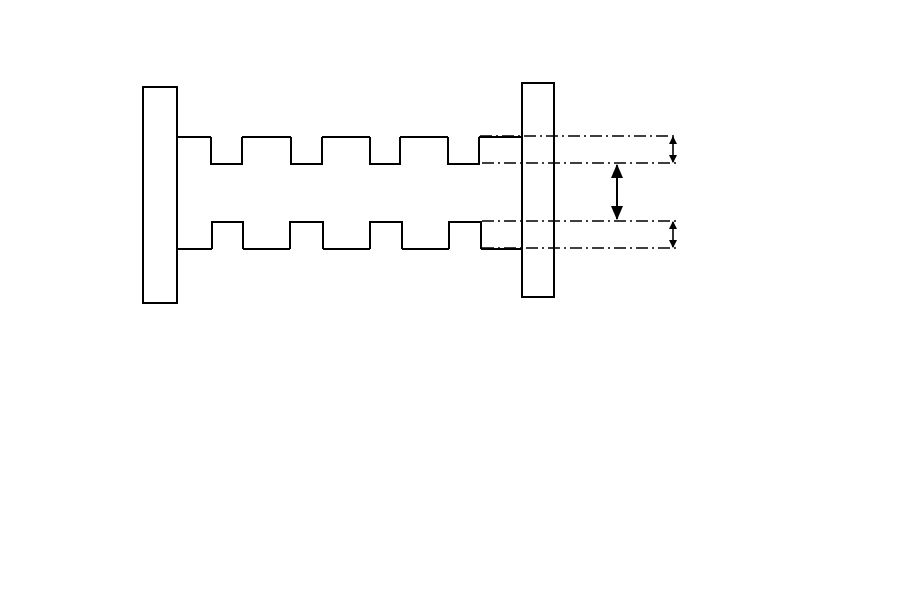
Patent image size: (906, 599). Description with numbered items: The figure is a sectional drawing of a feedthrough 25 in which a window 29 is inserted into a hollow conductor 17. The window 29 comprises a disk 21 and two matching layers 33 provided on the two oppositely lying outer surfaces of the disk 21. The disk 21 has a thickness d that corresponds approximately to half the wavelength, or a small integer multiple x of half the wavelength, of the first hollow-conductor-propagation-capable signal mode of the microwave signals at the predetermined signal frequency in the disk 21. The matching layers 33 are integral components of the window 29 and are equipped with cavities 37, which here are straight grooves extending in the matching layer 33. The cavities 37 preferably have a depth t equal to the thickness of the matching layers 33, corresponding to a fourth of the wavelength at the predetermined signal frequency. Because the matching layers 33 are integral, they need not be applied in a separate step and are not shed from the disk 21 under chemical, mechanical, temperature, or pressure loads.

The feedthrough 25 is at (93, 83).
The window 29 is at (262, 98).
The hollow conductor 17 is at (158, 172).
The disk 21 is at (366, 208).
The matching layer 33 is at (432, 144).
The cavities 37 is at (227, 147).